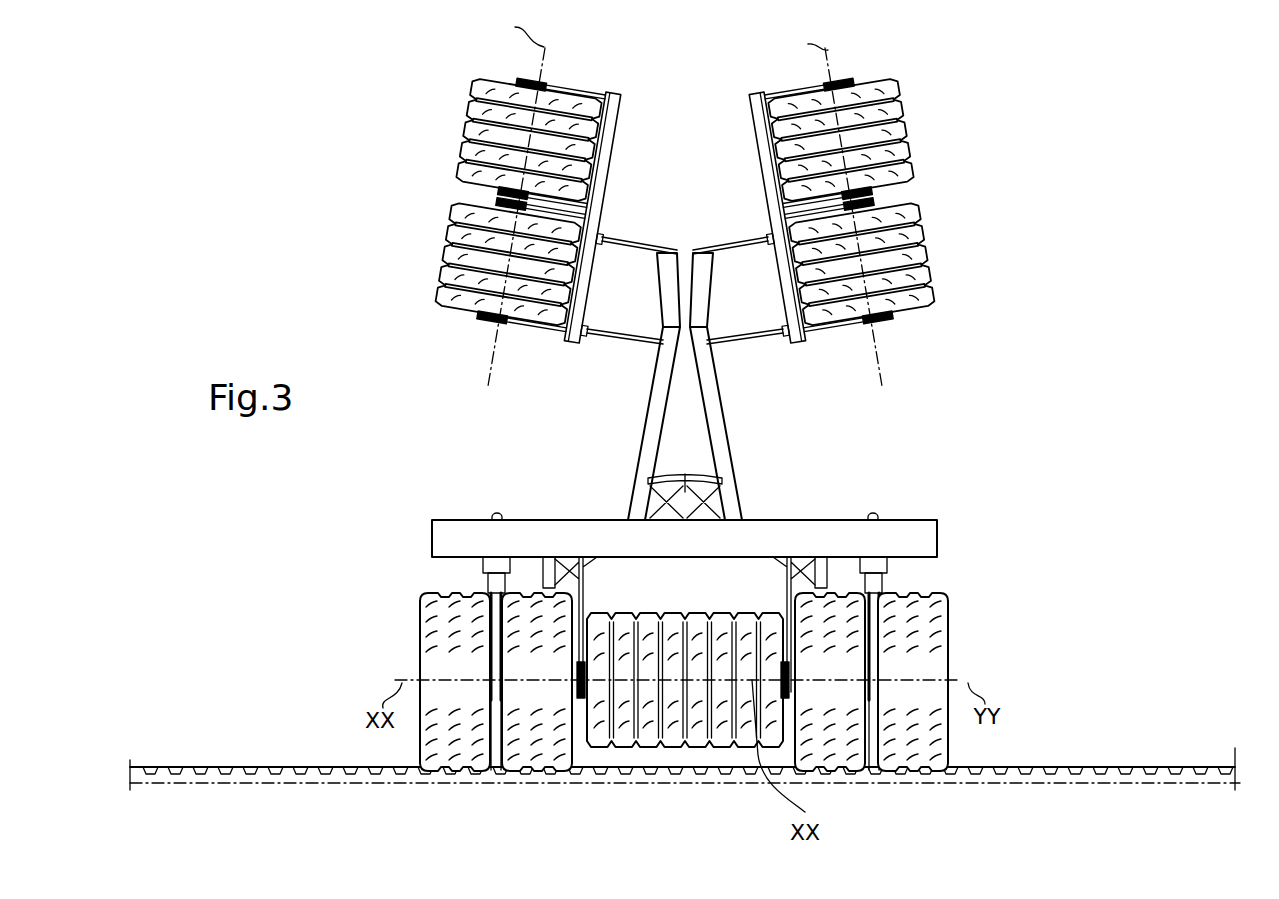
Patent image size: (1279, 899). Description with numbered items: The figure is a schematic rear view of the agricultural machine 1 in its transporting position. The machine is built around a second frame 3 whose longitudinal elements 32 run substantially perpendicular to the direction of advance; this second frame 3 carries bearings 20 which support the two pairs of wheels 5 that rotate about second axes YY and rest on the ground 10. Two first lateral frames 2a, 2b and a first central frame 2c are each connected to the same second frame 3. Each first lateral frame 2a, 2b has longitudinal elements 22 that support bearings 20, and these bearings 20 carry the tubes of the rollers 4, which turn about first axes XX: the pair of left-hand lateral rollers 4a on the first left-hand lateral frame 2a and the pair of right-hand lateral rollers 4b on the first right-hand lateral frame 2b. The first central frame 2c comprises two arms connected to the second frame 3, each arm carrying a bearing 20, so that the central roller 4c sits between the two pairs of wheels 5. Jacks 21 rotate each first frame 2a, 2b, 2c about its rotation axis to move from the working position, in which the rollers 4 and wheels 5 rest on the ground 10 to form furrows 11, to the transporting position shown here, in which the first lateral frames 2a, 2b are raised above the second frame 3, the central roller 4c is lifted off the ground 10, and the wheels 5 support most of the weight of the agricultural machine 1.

The agricultural machine 1 is at (1044, 388).
The first left-hand lateral frame 2a is at (633, 411).
The first right-hand lateral frame 2b is at (740, 411).
The first central frame 2c is at (752, 572).
The second frame 3 is at (846, 484).
The roller 4 is at (522, 154).
The pair of left-hand lateral rollers 4a is at (430, 68).
The pair of right-hand lateral rollers 4b is at (940, 68).
The central roller 4c is at (776, 796).
The wheel 5 is at (448, 712).
The ground 10 is at (1086, 768).
The furrow 11 is at (1006, 766).
The bearing 20 is at (547, 80).
The jack 21 is at (650, 497).
The longitudinal element 22 is at (662, 373).
The longitudinal element 32 is at (669, 550).